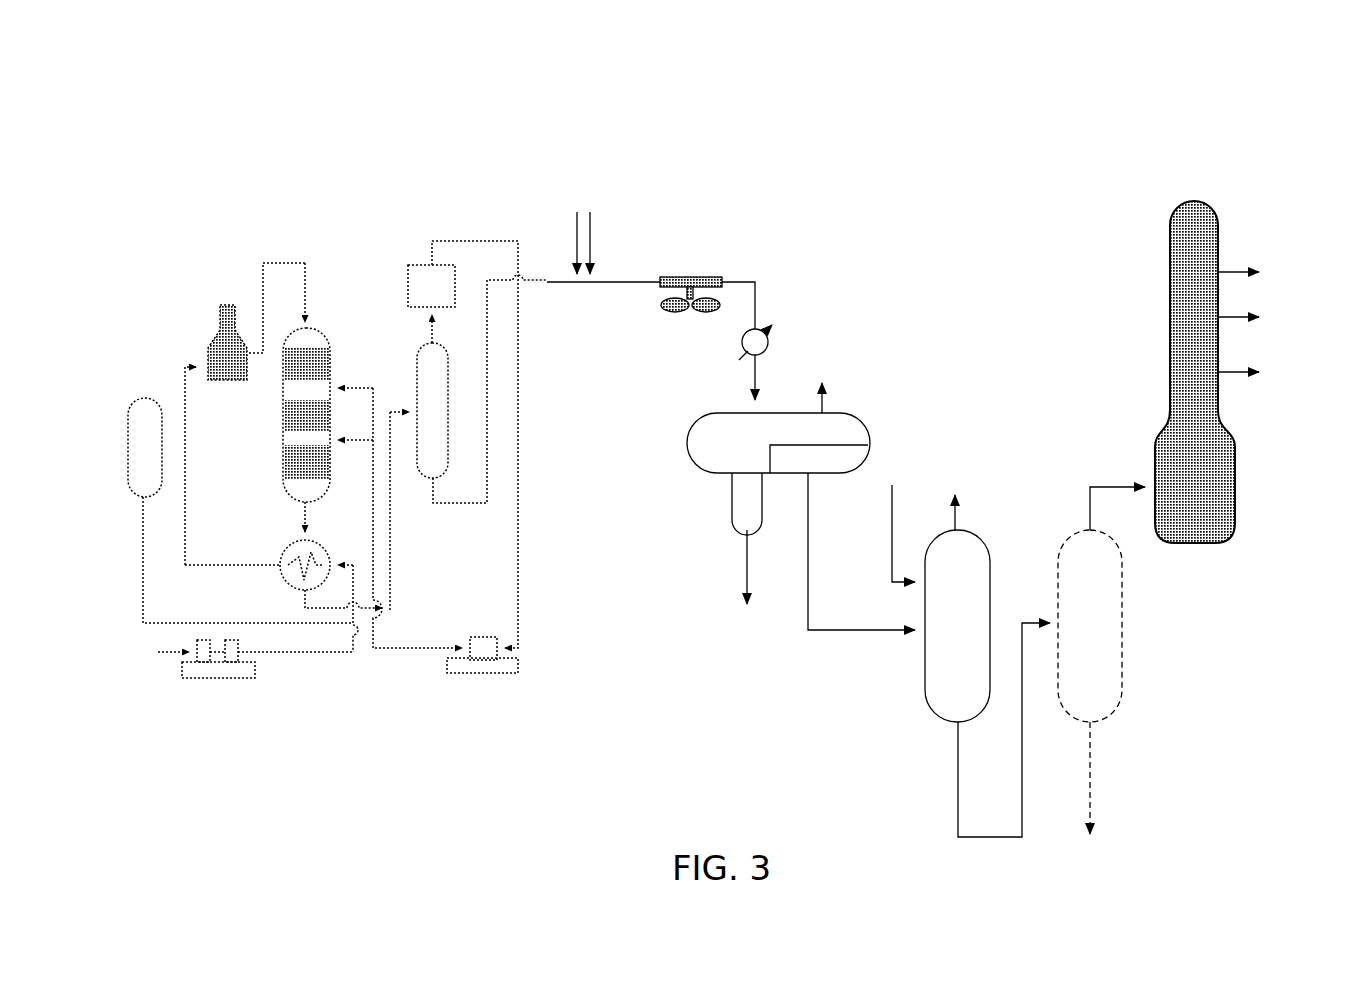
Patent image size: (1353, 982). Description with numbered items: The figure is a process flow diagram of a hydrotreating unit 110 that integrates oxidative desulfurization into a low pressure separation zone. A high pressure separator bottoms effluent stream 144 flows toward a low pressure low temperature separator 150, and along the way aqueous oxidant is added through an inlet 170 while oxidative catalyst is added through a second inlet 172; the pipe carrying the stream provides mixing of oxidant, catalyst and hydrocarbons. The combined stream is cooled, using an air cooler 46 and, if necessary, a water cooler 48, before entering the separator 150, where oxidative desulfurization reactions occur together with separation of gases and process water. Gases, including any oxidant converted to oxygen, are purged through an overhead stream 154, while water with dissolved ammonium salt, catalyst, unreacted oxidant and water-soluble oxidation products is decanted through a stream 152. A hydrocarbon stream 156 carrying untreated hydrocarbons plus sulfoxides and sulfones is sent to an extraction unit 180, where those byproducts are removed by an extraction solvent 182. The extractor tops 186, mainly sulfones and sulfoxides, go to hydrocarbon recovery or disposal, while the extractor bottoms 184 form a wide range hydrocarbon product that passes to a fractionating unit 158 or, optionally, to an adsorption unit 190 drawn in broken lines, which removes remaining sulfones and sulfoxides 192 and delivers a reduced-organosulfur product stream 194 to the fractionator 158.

The hydrotreating unit 110 is at (212, 122).
The inlet 170 is at (577, 222).
The inlet 172 is at (590, 222).
The high pressure separator bottoms effluent stream 144 is at (548, 284).
The air cooler 46 is at (690, 280).
The water cooler 48 is at (768, 342).
The overhead stream 154 is at (822, 398).
The low pressure low temperature separator 150 is at (778, 474).
The stream 152 is at (747, 552).
The hydrocarbon stream 156 is at (858, 640).
The extraction solvent 182 is at (892, 545).
The extraction unit 180 is at (957, 626).
The extractor tops 186 is at (955, 515).
The extractor bottoms 184 is at (958, 777).
The adsorption unit 190 is at (1090, 626).
The remaining sulfones and/or sulfoxides 192 is at (1090, 777).
The stream 194 is at (1090, 495).
The fractionating unit 158 is at (1207, 372).